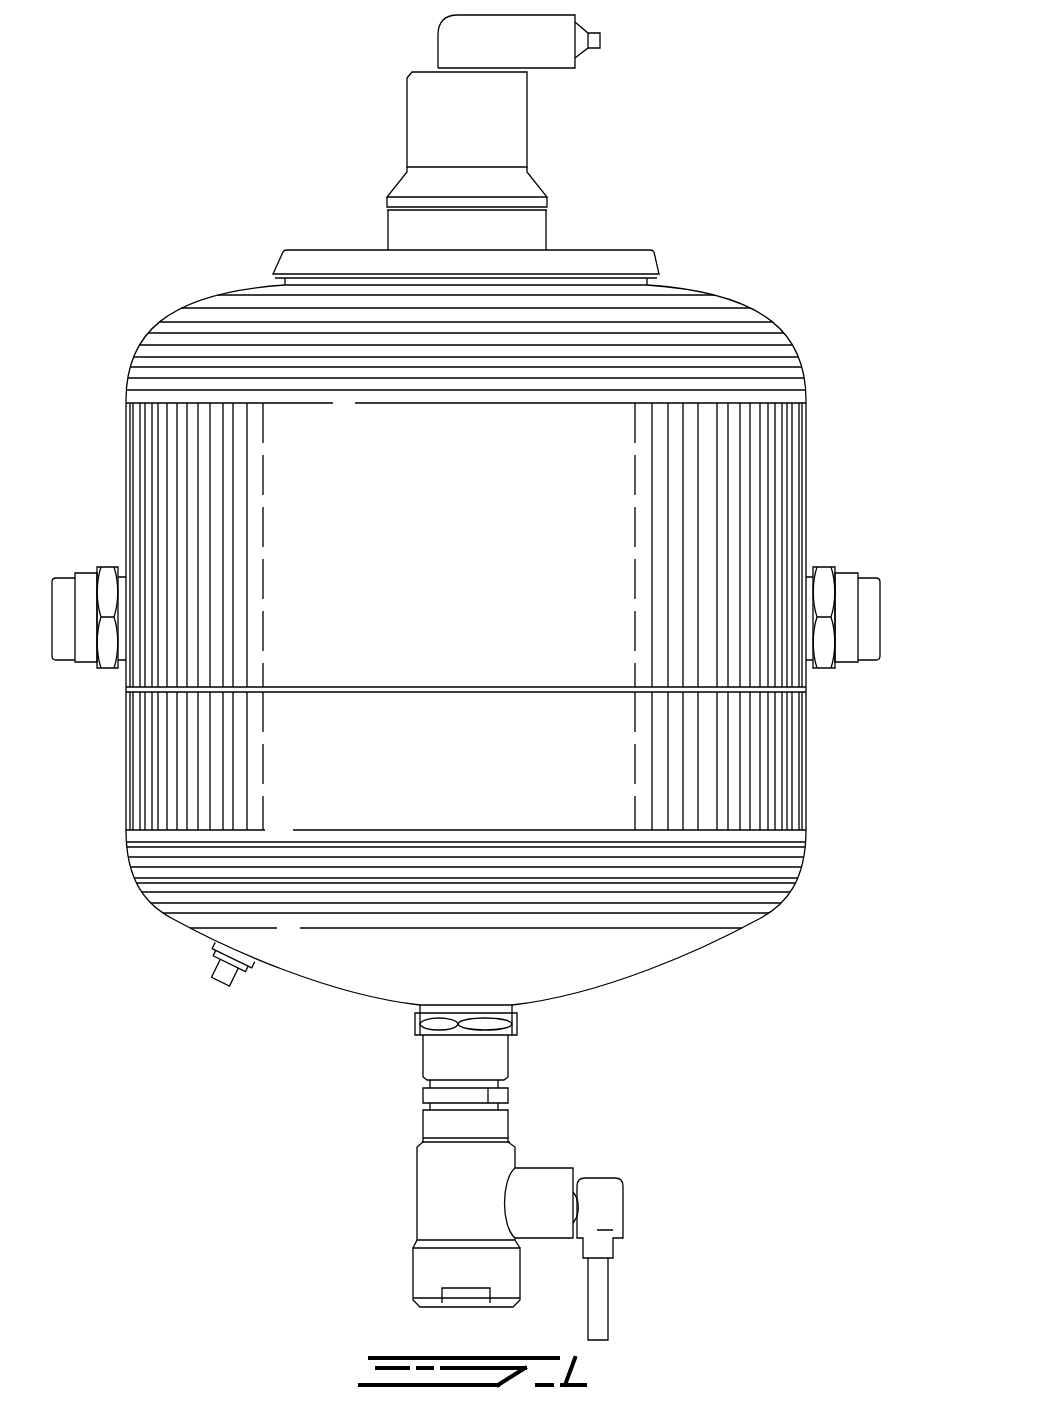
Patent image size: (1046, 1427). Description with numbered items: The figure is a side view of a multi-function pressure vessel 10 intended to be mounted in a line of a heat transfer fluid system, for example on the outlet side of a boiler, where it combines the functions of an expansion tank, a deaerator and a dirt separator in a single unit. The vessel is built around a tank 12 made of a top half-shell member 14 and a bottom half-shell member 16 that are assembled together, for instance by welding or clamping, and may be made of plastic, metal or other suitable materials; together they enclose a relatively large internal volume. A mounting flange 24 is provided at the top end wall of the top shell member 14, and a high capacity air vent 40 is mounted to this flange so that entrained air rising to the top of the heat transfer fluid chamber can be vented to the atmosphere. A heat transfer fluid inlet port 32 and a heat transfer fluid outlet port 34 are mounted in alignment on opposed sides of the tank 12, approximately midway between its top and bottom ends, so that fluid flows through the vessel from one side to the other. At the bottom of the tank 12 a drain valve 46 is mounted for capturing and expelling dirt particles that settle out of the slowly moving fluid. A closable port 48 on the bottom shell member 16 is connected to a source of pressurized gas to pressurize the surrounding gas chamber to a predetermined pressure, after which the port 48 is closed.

The multi-function pressure vessel 10 is at (124, 943).
The tank 12 is at (778, 905).
The top half-shell member 14 is at (790, 343).
The bottom half-shell member 16 is at (735, 957).
The mounting flange 24 is at (633, 267).
The heat transfer fluid inlet port 32 is at (66, 640).
The heat transfer fluid outlet port 34 is at (870, 645).
The high capacity air vent 40 is at (583, 128).
The drain valve 46 is at (640, 1231).
The closable port 48 is at (243, 985).